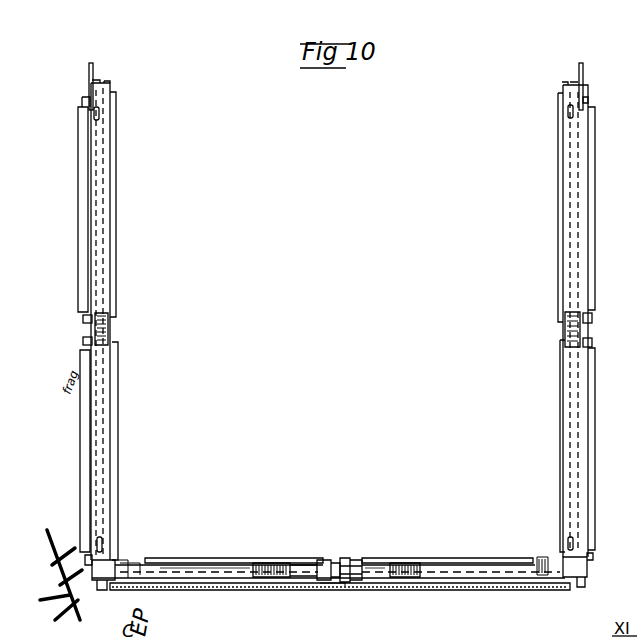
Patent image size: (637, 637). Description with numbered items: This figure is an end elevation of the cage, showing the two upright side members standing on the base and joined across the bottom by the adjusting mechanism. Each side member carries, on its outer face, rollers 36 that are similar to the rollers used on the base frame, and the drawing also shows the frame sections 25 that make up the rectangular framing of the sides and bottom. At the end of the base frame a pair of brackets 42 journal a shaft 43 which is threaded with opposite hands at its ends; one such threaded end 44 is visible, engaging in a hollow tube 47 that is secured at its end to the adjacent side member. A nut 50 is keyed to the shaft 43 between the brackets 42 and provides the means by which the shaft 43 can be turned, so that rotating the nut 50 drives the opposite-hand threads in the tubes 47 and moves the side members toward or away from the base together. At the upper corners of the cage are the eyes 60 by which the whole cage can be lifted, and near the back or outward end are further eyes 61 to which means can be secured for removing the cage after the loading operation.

The frame section 25 is at (118, 355).
The rollers 36 is at (80, 355).
The brackets 42 is at (338, 580).
The shaft 43 is at (297, 572).
The threaded end 44 is at (268, 565).
The hollow tubes 47 is at (243, 576).
The nut 50 is at (348, 557).
The eyes 60 is at (94, 70).
The eyes 61 is at (100, 113).